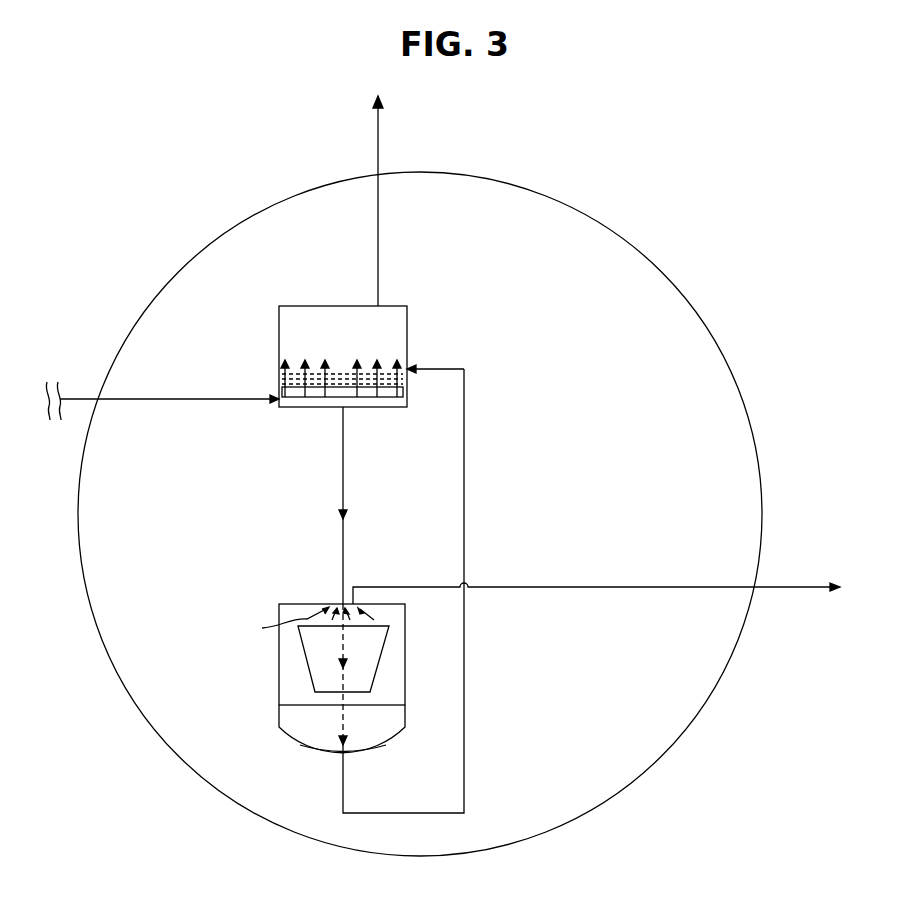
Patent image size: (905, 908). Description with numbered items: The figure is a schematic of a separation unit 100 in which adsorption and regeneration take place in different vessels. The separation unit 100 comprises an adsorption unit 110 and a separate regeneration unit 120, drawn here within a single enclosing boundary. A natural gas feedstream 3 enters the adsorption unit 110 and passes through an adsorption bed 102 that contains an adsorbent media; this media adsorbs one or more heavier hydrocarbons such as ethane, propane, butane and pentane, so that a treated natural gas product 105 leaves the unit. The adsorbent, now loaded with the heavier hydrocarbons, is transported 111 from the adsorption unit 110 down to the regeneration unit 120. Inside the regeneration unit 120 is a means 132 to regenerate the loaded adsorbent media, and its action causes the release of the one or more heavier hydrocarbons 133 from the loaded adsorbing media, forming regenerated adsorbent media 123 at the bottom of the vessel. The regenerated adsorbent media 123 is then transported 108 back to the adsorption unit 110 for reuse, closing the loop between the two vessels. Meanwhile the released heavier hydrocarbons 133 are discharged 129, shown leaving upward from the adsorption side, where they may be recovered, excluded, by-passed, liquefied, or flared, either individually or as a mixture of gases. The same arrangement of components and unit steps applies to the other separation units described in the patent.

The separation unit 100 is at (220, 214).
The adsorption unit 110 is at (303, 291).
The adsorption bed 102 is at (343, 372).
The discharge of released heavier hydrocarbons 129 is at (378, 240).
The natural gas feedstream 3 is at (197, 396).
The transport of regenerated adsorbent media 108 is at (464, 468).
The transport of loaded adsorbent 111 is at (343, 478).
The treated natural gas product 105 is at (616, 585).
The regeneration unit 120 is at (290, 592).
The means to regenerate loaded adsorbent media 132 is at (384, 656).
The released heavier hydrocarbons 133 is at (304, 622).
The regenerated adsorbent media 123 is at (343, 720).